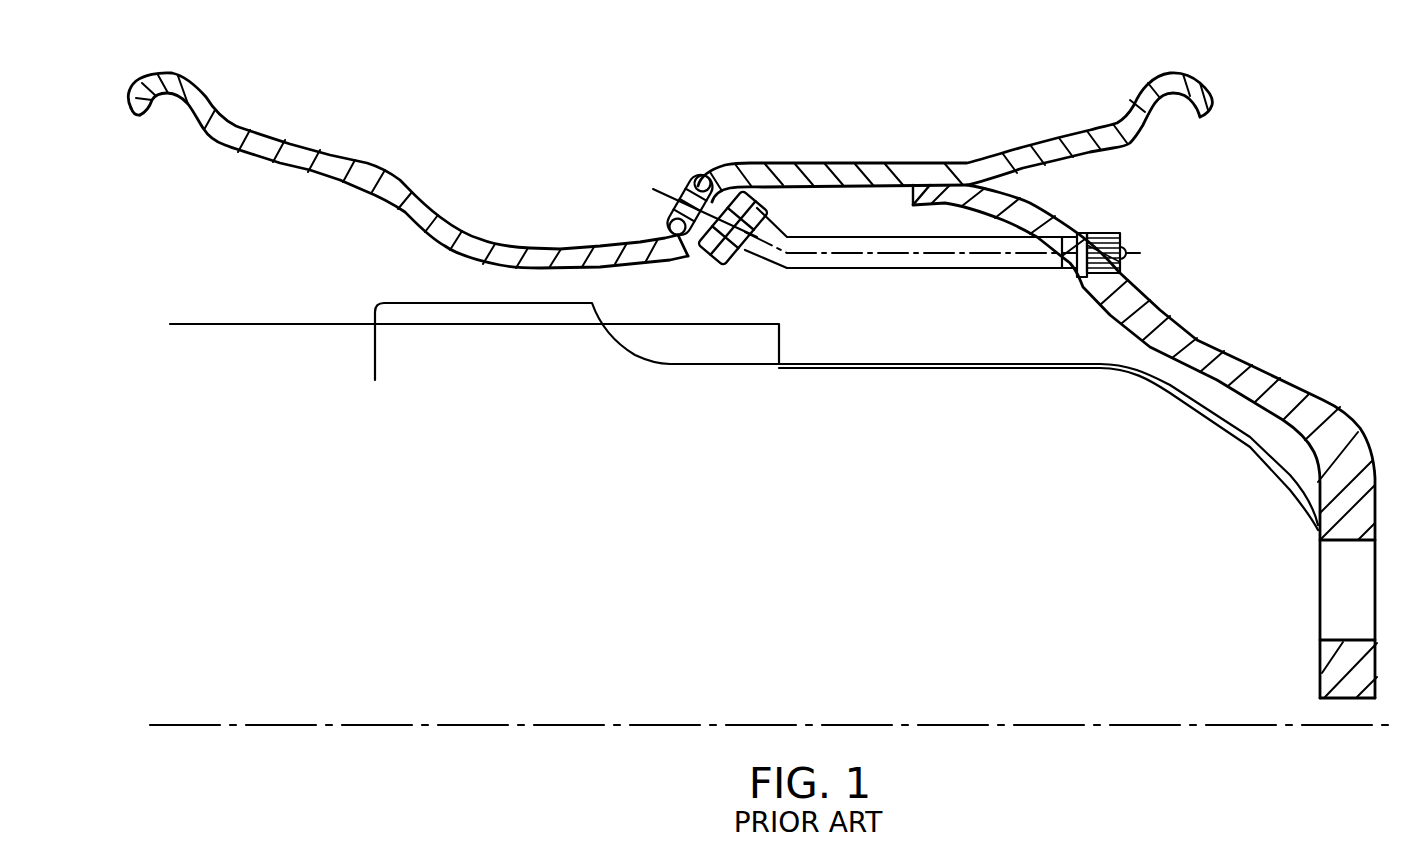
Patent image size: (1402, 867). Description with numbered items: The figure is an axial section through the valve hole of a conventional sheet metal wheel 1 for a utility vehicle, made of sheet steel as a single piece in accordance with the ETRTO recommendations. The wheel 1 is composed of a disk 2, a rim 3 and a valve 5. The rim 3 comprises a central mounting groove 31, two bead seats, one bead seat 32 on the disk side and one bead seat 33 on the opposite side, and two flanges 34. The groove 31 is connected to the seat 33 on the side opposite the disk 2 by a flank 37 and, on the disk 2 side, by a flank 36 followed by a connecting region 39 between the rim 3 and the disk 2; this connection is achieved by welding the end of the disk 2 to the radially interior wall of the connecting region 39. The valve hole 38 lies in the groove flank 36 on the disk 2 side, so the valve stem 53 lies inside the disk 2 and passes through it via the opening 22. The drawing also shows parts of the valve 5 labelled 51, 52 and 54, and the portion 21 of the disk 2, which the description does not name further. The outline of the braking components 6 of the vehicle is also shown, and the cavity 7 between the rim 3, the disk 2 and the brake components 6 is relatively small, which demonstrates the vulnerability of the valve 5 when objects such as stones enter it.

The sheet metal wheel 1 is at (698, 648).
The disk 2 is at (1300, 669).
The rim 3 is at (548, 122).
The valve 5 is at (968, 302).
The braking components 6 is at (801, 369).
The cavity 7 is at (928, 343).
The disc attachment portion 21 is at (940, 207).
The opening 22 is at (1175, 337).
The central mounting groove 31 is at (547, 255).
The bead seat 32 is at (1053, 147).
The bead seat 33 is at (287, 150).
The flange 34 is at (170, 88).
The flank 36 is at (656, 256).
The flank 37 is at (400, 199).
The valve hole 38 is at (737, 176).
The connecting region 39 is at (932, 173).
The nut 51 is at (760, 212).
The sealing ring 52 is at (686, 195).
The valve stem 53 is at (1007, 263).
The valve 54 is at (1117, 233).